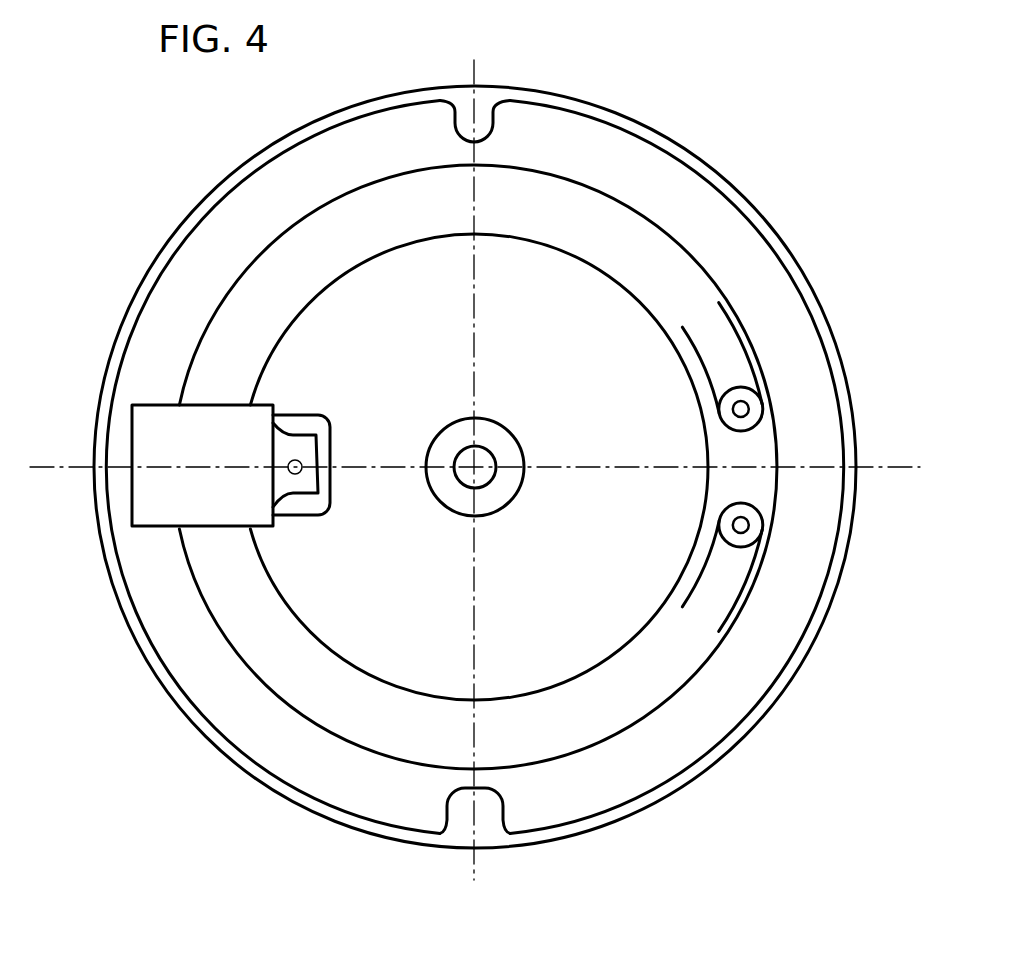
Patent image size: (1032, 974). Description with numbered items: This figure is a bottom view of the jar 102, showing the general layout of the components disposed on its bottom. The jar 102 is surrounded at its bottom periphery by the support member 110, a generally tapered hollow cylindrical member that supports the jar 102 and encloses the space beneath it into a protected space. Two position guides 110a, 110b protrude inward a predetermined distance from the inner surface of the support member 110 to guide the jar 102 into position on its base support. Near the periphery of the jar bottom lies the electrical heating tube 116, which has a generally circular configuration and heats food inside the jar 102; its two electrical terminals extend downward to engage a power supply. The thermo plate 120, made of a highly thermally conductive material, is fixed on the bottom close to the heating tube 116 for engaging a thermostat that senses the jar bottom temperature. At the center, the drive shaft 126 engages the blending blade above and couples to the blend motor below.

The jar 102 is at (430, 310).
The support member 110 is at (817, 625).
The position guide 110a is at (478, 112).
The position guide 110b is at (493, 827).
The electrical heating tube 116 is at (741, 409).
The thermo plate 120 is at (153, 418).
The drive shaft 126 is at (483, 460).